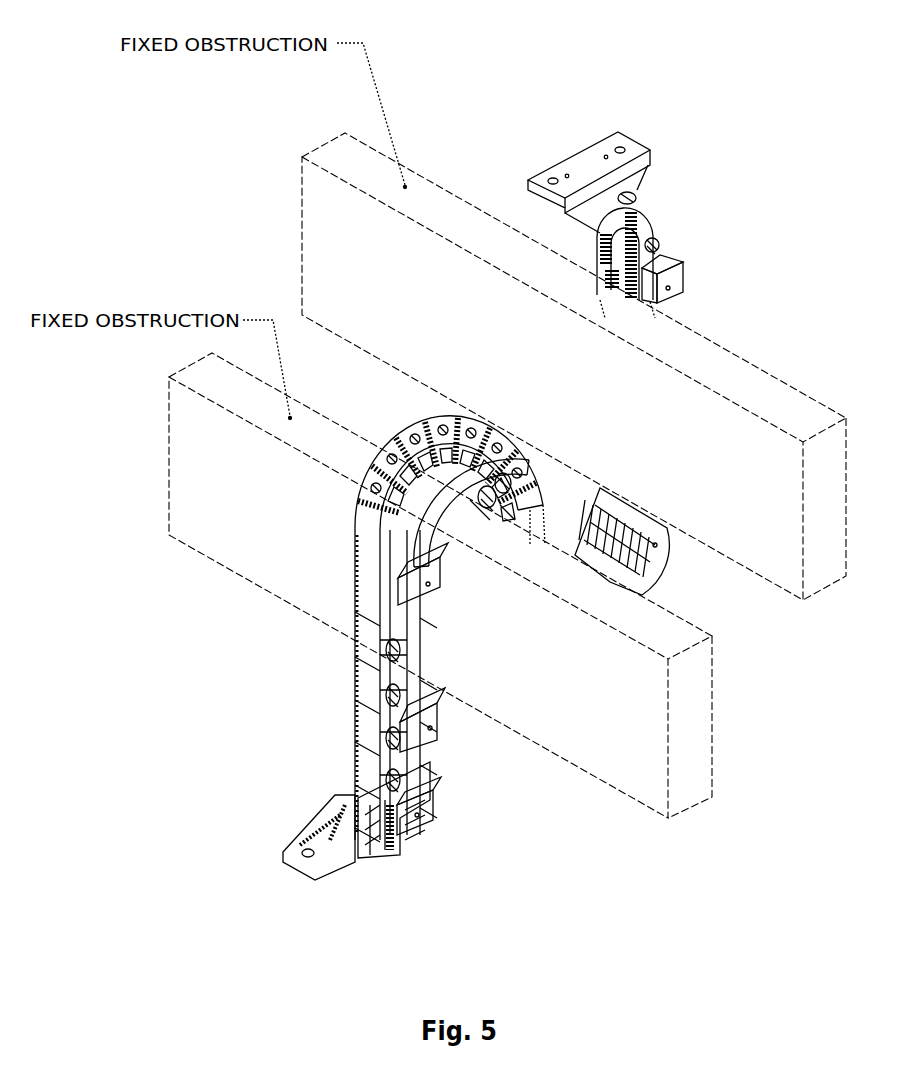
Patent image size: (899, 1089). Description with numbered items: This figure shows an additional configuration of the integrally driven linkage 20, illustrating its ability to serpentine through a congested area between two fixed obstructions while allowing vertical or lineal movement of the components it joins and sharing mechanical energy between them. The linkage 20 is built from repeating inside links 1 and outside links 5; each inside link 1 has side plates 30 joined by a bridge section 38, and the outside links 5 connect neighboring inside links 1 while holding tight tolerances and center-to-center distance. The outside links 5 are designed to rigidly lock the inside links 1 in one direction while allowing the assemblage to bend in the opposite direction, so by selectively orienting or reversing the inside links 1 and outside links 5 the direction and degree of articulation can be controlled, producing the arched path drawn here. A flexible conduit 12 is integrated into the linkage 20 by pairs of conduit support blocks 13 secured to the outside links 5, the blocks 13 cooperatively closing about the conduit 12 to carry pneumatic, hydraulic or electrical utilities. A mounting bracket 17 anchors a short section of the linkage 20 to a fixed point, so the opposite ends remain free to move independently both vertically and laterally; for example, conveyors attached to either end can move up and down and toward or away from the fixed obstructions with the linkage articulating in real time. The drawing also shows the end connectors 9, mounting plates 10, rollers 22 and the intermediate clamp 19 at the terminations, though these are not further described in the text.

The inside link 1 is at (440, 433).
The outside link 5 is at (397, 460).
The end connector base 9 is at (387, 865).
The mounting bracket 10 is at (335, 877).
The flexible conduit 12 is at (660, 553).
The conduit support block 13 is at (442, 575).
The mounting bracket 17 is at (508, 520).
The intermediate clamp 19 is at (445, 712).
The integrally driven linkage 20 is at (296, 686).
The roller 22 is at (422, 613).
The side plate 30 is at (353, 733).
The bridge section 38 is at (353, 648).